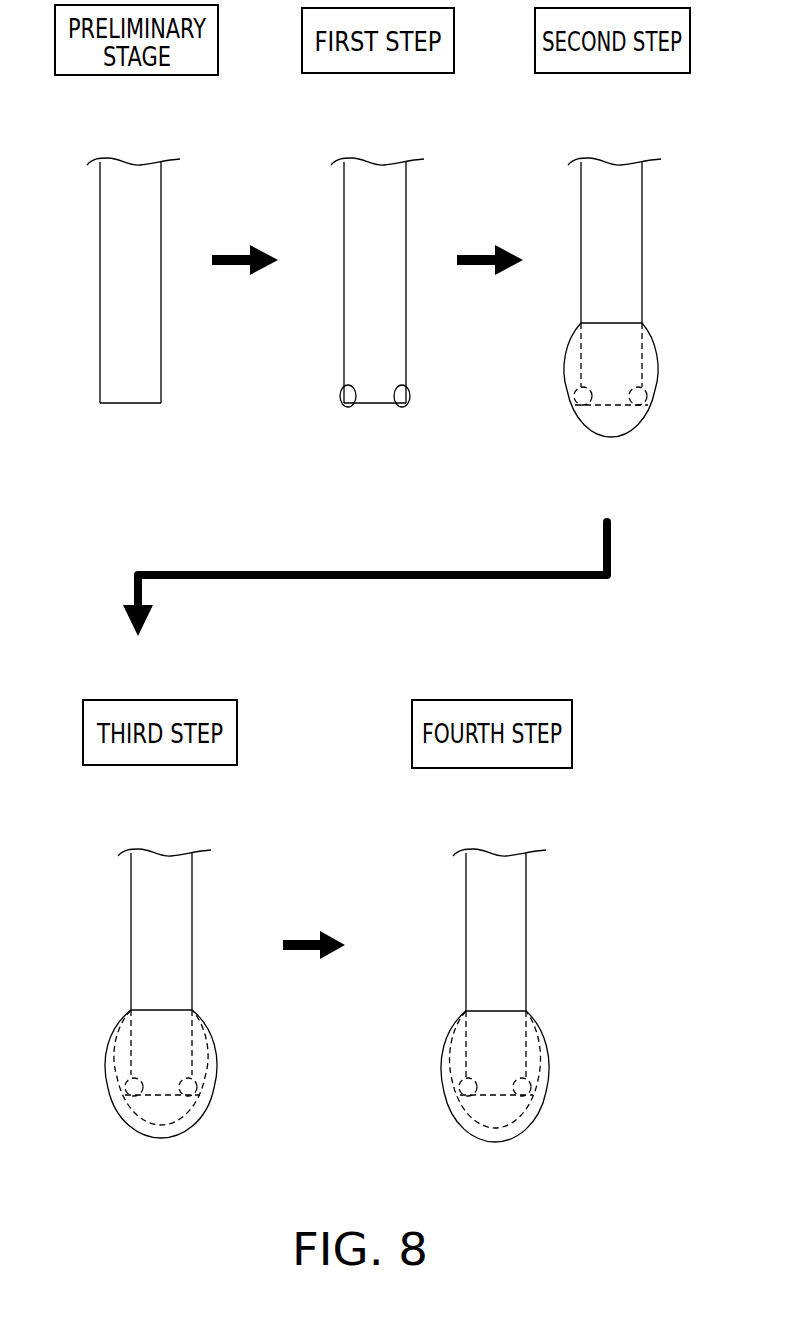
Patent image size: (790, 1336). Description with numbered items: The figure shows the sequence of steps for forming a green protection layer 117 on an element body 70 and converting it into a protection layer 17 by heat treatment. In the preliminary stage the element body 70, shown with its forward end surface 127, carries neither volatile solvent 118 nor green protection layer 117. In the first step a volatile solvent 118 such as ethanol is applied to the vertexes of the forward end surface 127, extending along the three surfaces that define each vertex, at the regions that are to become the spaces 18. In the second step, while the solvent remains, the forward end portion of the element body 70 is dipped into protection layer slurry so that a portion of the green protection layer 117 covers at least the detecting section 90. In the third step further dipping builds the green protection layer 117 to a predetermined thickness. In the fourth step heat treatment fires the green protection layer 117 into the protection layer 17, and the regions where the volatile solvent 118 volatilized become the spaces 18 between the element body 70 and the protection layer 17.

The element body 70 is at (100, 196).
The forward end surface 127 is at (129, 404).
The detecting section 90 is at (340, 376).
The volatile solvent 118 is at (342, 406).
The green protection layer 117 is at (612, 437).
The spaces 18 is at (450, 1099).
The protection layer 17 is at (487, 1142).